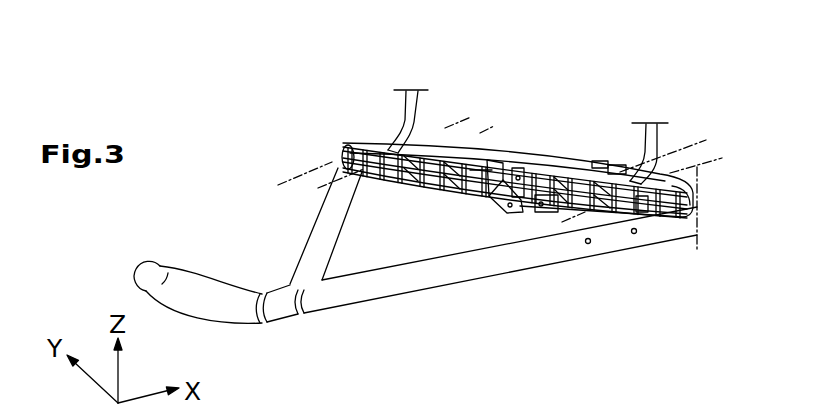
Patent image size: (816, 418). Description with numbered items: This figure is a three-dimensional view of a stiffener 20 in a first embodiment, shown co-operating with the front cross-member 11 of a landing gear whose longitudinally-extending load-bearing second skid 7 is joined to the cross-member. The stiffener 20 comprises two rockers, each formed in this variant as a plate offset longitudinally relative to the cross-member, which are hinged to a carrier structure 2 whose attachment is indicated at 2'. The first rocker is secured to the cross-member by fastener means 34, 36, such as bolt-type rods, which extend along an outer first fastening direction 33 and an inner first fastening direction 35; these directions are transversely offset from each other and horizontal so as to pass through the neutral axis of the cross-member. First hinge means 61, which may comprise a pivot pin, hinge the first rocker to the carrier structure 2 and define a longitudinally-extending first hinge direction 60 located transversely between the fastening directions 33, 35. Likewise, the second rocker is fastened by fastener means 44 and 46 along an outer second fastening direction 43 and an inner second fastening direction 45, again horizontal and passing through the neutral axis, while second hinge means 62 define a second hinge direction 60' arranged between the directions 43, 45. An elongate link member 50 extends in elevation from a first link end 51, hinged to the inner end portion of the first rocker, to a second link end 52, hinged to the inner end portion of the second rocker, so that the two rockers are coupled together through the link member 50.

The carrier structure 2 is at (527, 109).
The attachment fitting axis 2' is at (526, 125).
The second skid 7 is at (420, 281).
The front cross-member 11 is at (503, 191).
The stiffener 20 is at (328, 153).
The outer first fastening direction 33 is at (706, 181).
The fastener means 34 is at (672, 218).
The inner first fastening direction 35 is at (706, 141).
The fastener means 36 is at (600, 172).
The outer second fastening direction 43 is at (292, 176).
The fastener means 44 is at (343, 143).
The inner second fastening direction 45 is at (488, 130).
The fastener means 46 is at (441, 180).
The elongate link member 50 is at (527, 200).
The first link end 51 is at (513, 160).
The second link end 52 is at (533, 196).
The first hinge direction 60 is at (583, 269).
The second hinge direction 60' is at (468, 92).
The first hinge means 61 is at (640, 217).
The second hinge means 62 is at (393, 180).